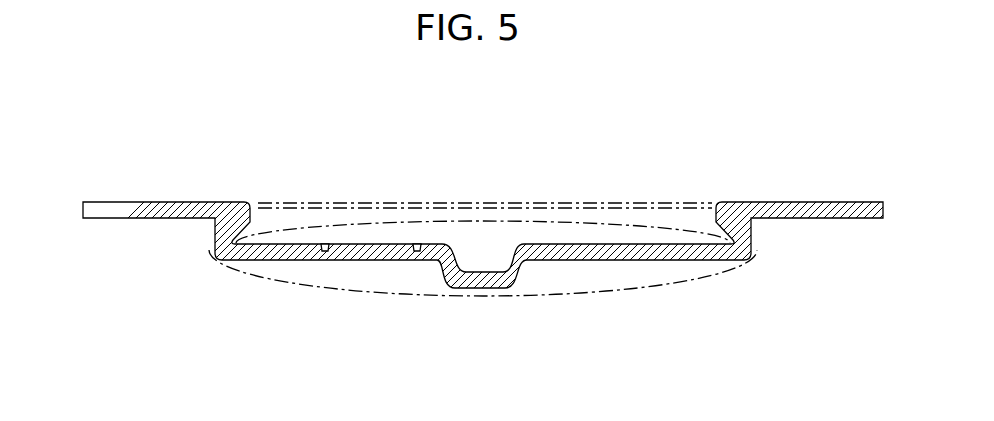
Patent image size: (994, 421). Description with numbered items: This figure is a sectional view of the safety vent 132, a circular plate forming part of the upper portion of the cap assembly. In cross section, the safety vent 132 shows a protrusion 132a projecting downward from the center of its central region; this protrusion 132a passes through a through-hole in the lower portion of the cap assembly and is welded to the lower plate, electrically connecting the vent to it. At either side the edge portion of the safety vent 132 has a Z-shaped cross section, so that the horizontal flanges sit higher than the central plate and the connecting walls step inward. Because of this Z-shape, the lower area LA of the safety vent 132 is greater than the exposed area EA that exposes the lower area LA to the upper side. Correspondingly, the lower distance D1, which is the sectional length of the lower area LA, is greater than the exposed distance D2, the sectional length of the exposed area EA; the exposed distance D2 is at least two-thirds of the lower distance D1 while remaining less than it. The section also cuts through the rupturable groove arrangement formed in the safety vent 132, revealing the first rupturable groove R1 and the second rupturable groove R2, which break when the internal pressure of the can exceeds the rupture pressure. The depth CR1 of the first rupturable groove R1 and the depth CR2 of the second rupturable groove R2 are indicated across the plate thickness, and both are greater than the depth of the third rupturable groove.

The safety vent 132 is at (90, 158).
The protrusion 132a is at (478, 289).
The lower distance D1 is at (751, 202).
The exposed distance D2 is at (716, 202).
The exposed area EA is at (302, 208).
The lower area LA is at (355, 295).
The first rupturable groove R1 is at (417, 253).
The second rupturable groove R2 is at (325, 253).
The depth of the first rupturable groove CR1 is at (548, 213).
The depth of the second rupturable groove CR2 is at (635, 213).